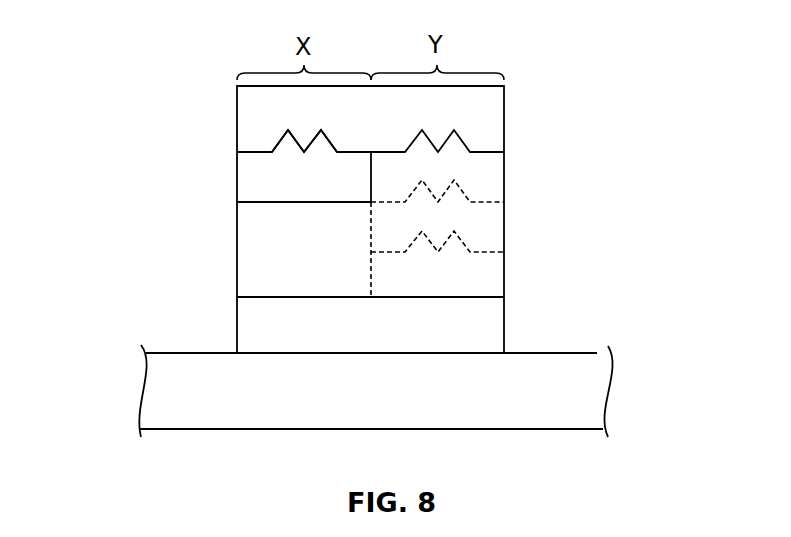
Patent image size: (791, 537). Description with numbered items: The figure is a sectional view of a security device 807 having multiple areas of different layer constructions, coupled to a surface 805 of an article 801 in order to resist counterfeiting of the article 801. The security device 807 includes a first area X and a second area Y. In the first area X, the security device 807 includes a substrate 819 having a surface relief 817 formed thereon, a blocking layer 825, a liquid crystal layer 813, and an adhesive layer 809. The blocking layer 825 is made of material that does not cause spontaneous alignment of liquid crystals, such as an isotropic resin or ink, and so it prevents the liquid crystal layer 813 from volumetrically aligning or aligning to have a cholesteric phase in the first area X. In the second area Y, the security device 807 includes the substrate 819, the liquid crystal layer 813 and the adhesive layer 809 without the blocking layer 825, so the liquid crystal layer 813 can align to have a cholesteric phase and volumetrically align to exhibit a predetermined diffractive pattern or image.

The article 801 is at (140, 316).
The surface 805 is at (597, 352).
The security device 807 is at (216, 220).
The adhesive layer 809 is at (504, 325).
The liquid crystal layer 813 is at (483, 230).
The surface relief 817 is at (277, 137).
The substrate 819 is at (504, 112).
The blocking layer 825 is at (237, 172).